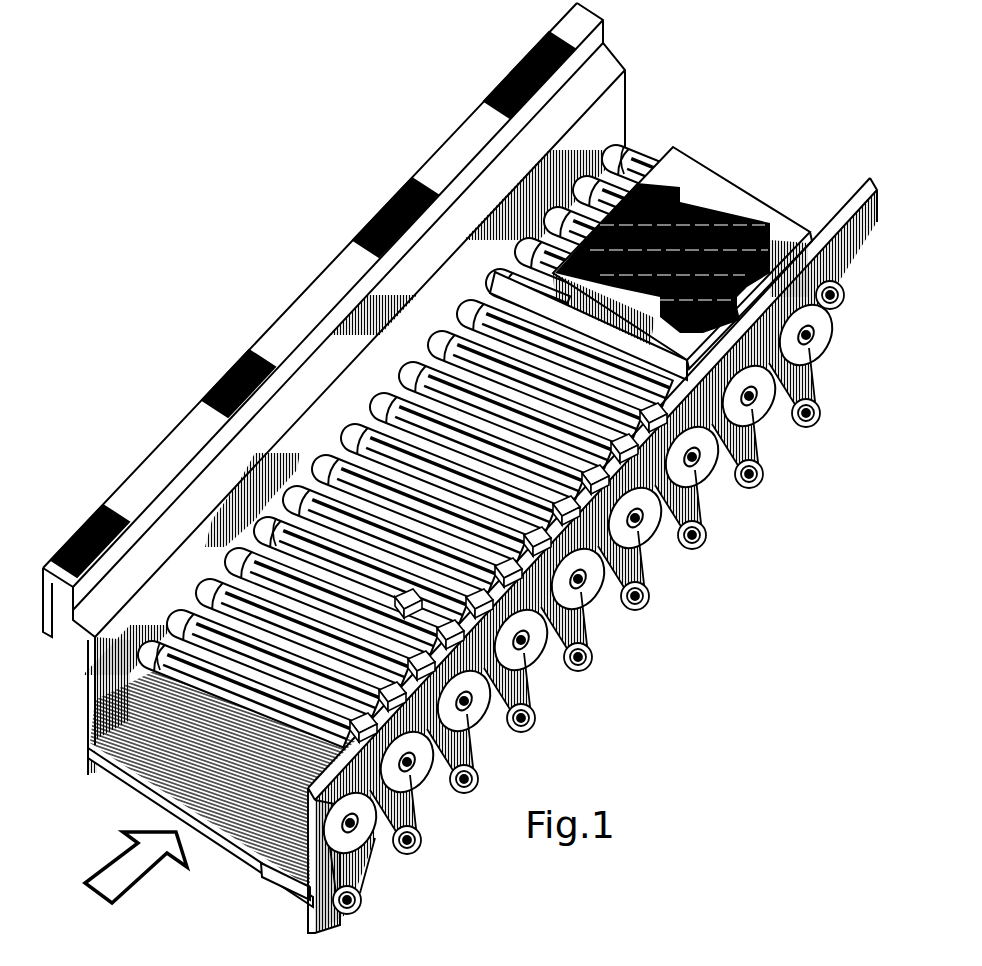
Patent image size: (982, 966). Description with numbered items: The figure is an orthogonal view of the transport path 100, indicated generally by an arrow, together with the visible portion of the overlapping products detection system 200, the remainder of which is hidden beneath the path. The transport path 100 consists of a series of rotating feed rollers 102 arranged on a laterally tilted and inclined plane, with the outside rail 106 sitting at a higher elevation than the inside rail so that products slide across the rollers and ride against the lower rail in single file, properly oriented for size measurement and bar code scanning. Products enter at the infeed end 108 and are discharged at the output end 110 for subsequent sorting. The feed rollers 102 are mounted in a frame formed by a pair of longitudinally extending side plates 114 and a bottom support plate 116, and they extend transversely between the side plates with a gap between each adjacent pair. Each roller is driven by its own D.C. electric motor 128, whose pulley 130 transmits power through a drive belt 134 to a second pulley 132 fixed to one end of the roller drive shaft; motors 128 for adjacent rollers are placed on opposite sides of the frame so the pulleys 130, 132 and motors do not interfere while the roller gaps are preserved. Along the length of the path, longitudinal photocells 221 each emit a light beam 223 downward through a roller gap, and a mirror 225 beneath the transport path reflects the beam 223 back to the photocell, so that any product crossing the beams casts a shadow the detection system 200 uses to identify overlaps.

The transport path 100 is at (110, 882).
The feed rollers 102 is at (641, 165).
The outside rail 106 is at (103, 665).
The infeed end 108 is at (193, 768).
The output end 110 is at (652, 158).
The side plates 114 is at (88, 712).
The bottom support plate 116 is at (262, 848).
The D.C. electric motor 128 is at (293, 893).
The pulley 130 is at (760, 488).
The second pulley 132 is at (777, 427).
The drive belt 134 is at (773, 440).
The overlapping products detection system 200 is at (740, 215).
The longitudinal photocells 221 is at (579, 434).
The light beam 223 is at (420, 592).
The mirror 225 is at (163, 748).